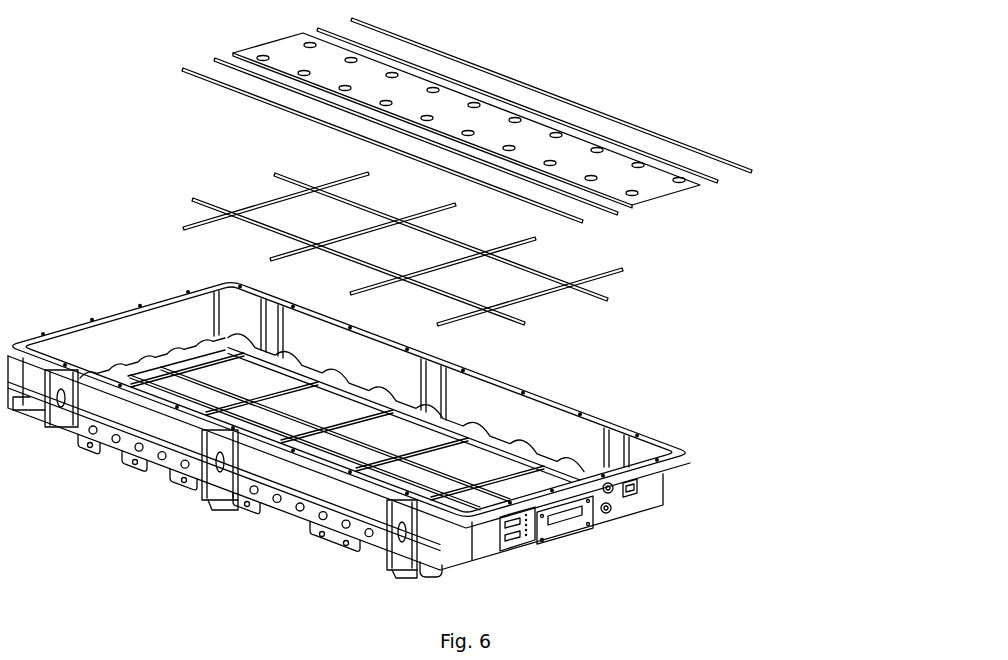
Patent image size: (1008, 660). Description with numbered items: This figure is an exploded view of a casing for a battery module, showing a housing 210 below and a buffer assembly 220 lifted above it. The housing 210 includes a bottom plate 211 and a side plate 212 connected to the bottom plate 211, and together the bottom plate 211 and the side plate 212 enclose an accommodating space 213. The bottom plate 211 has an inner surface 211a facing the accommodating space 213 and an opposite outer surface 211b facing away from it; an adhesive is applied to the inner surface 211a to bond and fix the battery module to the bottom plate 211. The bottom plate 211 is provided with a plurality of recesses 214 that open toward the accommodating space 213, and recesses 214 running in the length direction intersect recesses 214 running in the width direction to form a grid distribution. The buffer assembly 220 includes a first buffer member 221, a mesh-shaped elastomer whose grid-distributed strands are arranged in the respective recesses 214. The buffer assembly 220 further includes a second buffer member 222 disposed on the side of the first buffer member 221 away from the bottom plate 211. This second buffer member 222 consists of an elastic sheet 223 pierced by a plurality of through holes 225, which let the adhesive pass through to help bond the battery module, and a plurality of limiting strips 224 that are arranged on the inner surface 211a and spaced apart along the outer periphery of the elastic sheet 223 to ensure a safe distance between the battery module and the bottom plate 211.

The housing 210 is at (690, 417).
The bottom plate 211 is at (525, 548).
The inner surface 211a is at (353, 455).
The outer surface 211b is at (497, 562).
The side plate 212 is at (296, 478).
The accommodating space 213 is at (478, 402).
The recess 214 is at (503, 477).
The buffer assembly 220 is at (866, 170).
The first buffer member 221 is at (622, 268).
The second buffer member 222 is at (807, 140).
The elastic sheet 223 is at (678, 201).
The limiting strip 224 is at (729, 161).
The through hole 225 is at (638, 197).